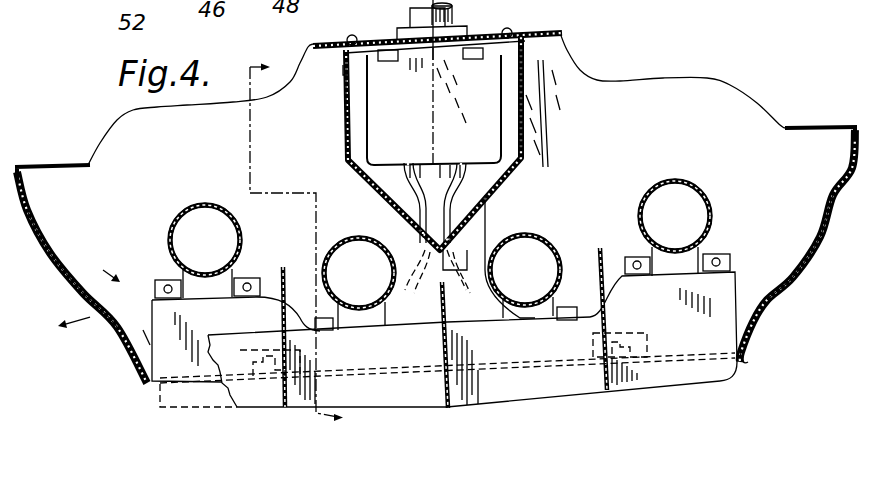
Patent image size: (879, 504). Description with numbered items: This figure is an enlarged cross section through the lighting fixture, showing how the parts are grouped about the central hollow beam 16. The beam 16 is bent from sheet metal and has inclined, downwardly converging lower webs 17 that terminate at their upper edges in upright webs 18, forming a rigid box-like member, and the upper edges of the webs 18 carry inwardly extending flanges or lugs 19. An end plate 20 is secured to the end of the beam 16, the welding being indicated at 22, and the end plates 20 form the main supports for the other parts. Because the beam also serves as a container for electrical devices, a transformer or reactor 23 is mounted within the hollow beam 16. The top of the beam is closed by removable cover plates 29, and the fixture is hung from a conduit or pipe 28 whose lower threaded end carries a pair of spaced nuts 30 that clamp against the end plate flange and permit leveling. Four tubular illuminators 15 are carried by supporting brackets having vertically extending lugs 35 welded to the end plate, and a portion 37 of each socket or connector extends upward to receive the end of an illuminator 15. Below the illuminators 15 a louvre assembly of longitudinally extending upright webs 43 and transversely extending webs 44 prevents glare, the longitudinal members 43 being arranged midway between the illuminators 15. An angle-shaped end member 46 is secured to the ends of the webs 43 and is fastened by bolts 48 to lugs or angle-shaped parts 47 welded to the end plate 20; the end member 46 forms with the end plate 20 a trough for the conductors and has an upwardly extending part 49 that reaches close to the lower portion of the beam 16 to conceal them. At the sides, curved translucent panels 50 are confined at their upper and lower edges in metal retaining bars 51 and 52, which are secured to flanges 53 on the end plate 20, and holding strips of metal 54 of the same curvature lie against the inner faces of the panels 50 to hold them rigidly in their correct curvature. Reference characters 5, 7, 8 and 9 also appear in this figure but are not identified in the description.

The section line 5 is at (86, 302).
The section line 7 is at (302, 233).
The bracket 8 is at (461, 265).
The partition plate 9 is at (272, 348).
The tubular illuminators 15 is at (440, 254).
The hollow beam 16 is at (510, 128).
The lower webs 17 is at (503, 173).
The upright webs 18 is at (346, 126).
The flanges or lugs 19 is at (314, 52).
The end plates 20 is at (437, 99).
The welding 22 is at (343, 78).
The transformer or reactor 23 is at (434, 106).
The conduits or pipes 28 is at (447, 27).
The removable cover plates 29 is at (492, 32).
The nuts 30 is at (398, 32).
The vertically extending lugs 35 is at (244, 280).
The portion of socket or connector 37 is at (547, 305).
The longitudinally extending upright webs 43 is at (445, 324).
The transversely extending webs 44 is at (476, 345).
The angle-shaped end member 46 is at (143, 412).
The lugs or angle-shaped parts 47 is at (678, 333).
The bolts 48 is at (662, 366).
The upwardly extending parts 49 is at (473, 230).
The translucent panels 50 is at (58, 267).
The upper metal retaining bar 51 is at (33, 193).
The lower metal retaining bar 52 is at (147, 332).
The flanges 53 is at (78, 293).
The holding strips of metal 54 is at (55, 260).